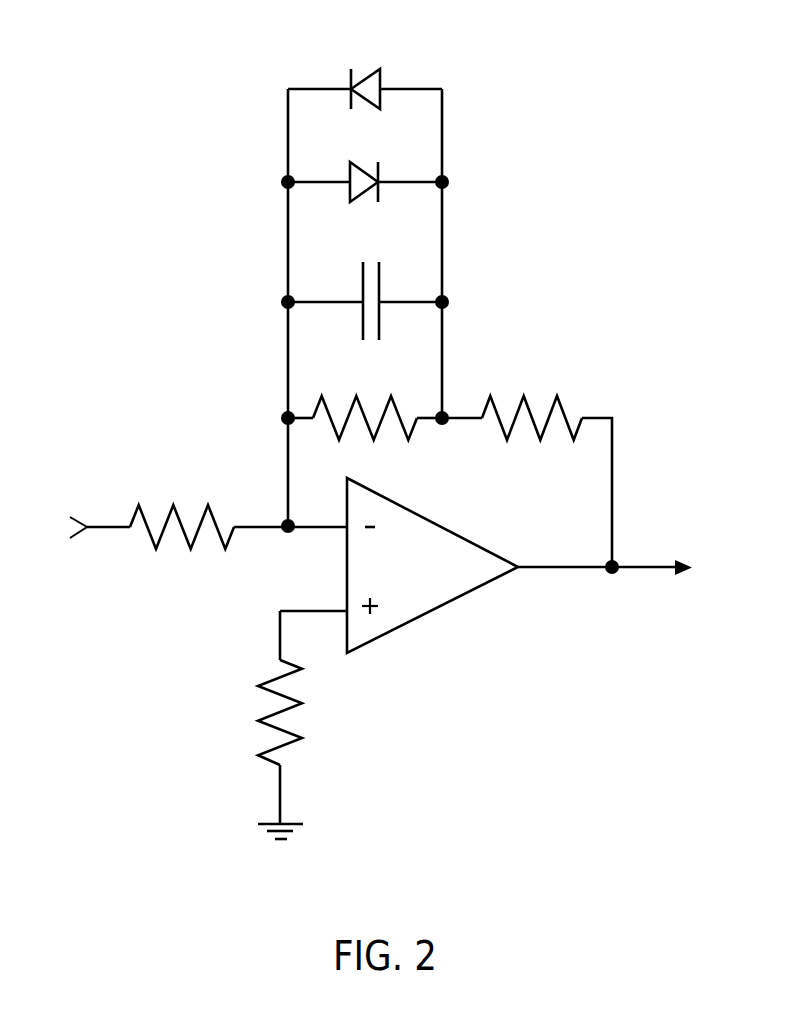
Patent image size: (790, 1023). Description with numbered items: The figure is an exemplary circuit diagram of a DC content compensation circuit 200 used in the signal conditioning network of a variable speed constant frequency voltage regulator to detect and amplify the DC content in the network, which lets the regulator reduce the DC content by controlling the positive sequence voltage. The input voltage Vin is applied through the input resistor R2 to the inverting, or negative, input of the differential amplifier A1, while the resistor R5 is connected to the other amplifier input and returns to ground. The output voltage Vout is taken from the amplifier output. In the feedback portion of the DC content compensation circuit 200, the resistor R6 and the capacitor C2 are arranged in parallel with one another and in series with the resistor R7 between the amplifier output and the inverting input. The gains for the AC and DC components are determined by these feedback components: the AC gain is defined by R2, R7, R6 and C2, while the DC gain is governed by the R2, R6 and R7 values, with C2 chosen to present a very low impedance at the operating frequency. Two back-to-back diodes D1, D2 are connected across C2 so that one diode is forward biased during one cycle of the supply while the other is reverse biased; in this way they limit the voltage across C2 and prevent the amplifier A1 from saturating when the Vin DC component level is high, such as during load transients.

The DC content compensation circuit 200 is at (125, 34).
The diode D2 is at (365, 72).
The diode D1 is at (365, 166).
The capacitor C2 is at (365, 284).
The resistor R6 is at (365, 400).
The resistor R7 is at (527, 463).
The resistor R2 is at (187, 508).
The differential amplifier A1 is at (478, 565).
The resistor R5 is at (297, 725).
The input voltage Vin is at (59, 529).
The output voltage Vout is at (707, 569).